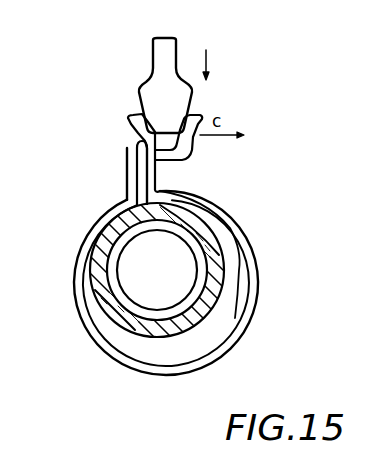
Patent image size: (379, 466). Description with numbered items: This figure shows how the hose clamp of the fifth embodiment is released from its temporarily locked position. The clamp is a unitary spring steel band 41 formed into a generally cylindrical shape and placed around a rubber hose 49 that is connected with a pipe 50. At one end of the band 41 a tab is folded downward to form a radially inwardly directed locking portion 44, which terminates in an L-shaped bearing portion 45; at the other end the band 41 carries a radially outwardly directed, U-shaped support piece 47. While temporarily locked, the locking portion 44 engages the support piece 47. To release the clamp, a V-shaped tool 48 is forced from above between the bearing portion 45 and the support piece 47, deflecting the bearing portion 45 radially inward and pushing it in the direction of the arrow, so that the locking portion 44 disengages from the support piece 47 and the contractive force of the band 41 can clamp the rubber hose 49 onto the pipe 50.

The spring steel band 41 is at (250, 322).
The locking portion 44 is at (127, 150).
The bearing portion 45 is at (193, 115).
The support piece 47 is at (129, 120).
The V-shaped tool 48 is at (143, 76).
The rubber hose 49 is at (88, 279).
The pipe 50 is at (130, 290).